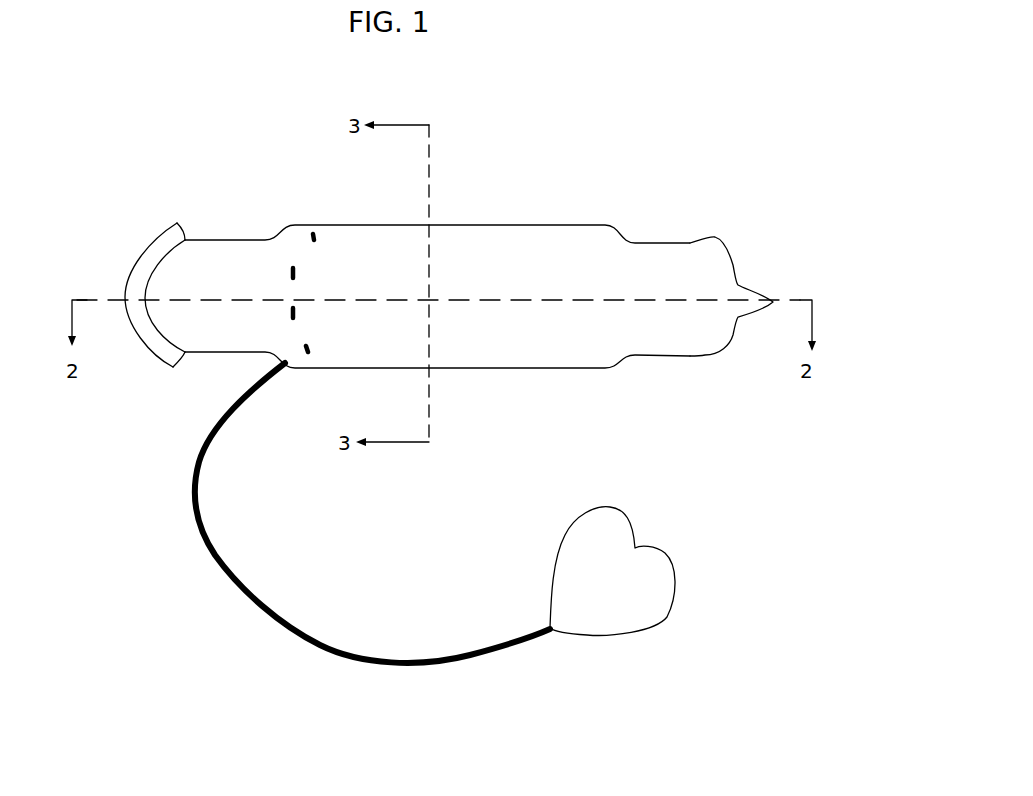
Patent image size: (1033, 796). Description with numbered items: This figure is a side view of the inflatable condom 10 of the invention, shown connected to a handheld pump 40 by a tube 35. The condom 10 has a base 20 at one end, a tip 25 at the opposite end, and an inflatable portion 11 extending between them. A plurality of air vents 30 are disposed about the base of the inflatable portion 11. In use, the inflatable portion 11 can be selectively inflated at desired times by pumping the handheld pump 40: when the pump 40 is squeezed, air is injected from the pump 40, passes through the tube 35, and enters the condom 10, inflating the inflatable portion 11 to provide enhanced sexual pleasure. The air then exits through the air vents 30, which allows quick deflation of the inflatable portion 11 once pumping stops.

The inflatable condom 10 is at (592, 165).
The inflatable portion 11 is at (475, 386).
The base 20 is at (178, 222).
The tip 25 is at (741, 357).
The air vents 30 is at (317, 237).
The tube 35 is at (260, 607).
The handheld pump 40 is at (620, 615).